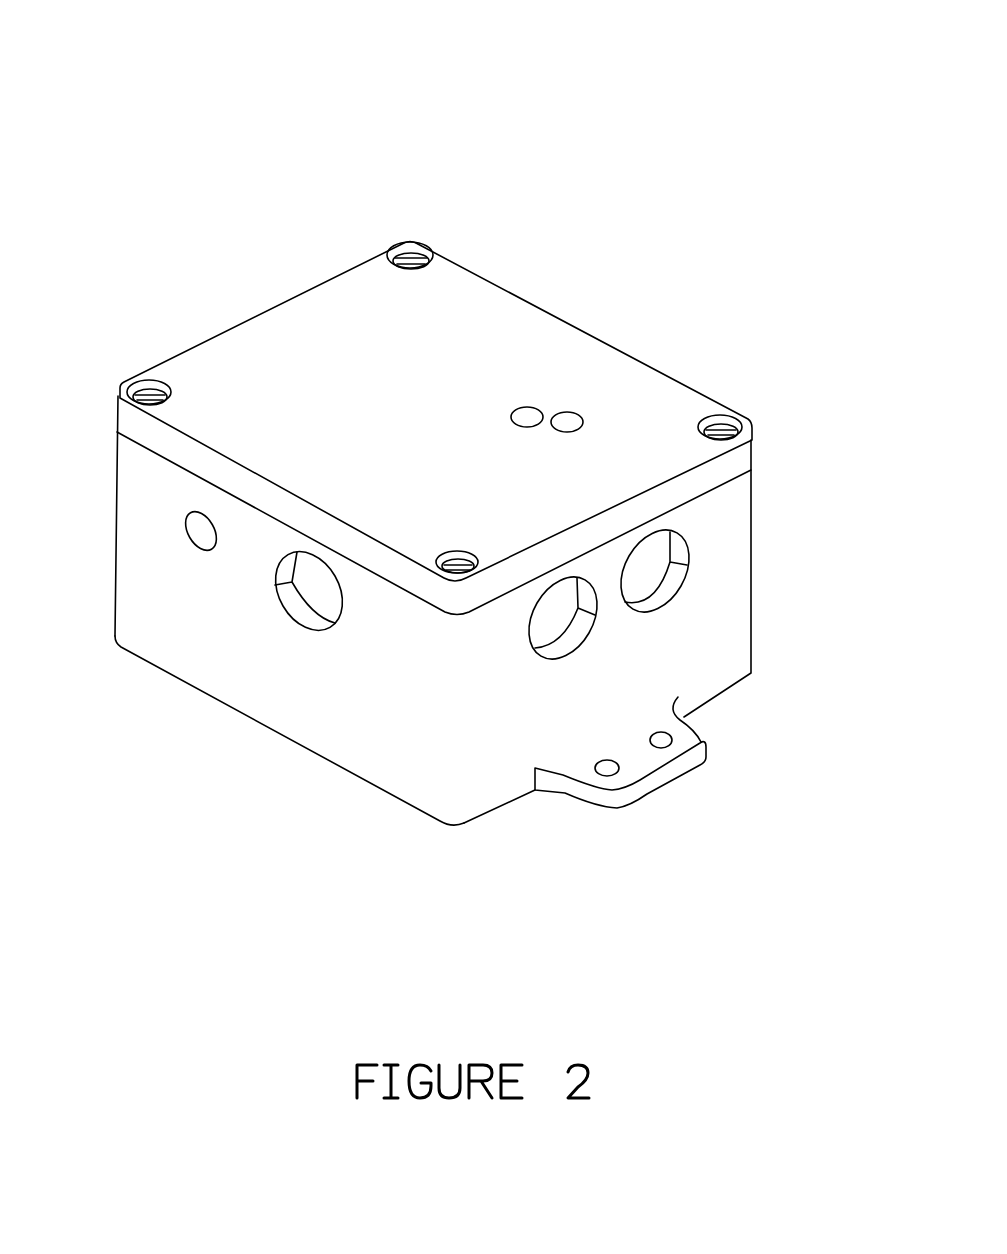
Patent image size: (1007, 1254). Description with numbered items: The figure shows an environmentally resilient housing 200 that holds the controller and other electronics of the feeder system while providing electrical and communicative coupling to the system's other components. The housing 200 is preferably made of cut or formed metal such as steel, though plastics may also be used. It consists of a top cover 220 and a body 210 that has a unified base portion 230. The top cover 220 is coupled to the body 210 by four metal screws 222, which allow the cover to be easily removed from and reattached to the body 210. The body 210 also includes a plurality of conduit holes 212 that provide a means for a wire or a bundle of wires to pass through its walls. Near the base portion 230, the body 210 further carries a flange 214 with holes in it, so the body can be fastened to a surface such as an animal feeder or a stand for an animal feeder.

The environmentally resilient housing 200 is at (175, 118).
The body 210 is at (752, 512).
The conduit holes 212 is at (652, 568).
The flange 214 is at (665, 777).
The top cover 220 is at (298, 332).
The metal screws 222 is at (119, 384).
The base portion 230 is at (272, 762).